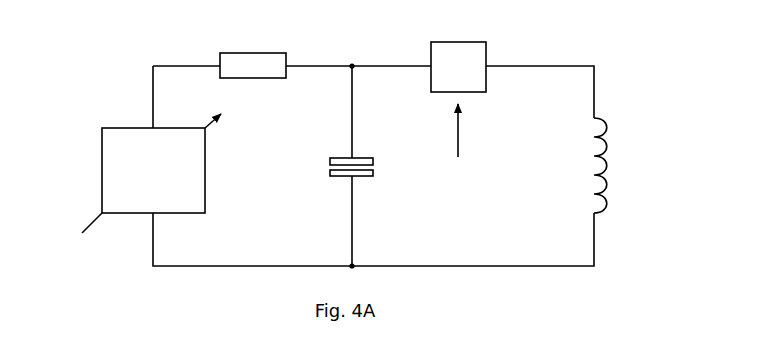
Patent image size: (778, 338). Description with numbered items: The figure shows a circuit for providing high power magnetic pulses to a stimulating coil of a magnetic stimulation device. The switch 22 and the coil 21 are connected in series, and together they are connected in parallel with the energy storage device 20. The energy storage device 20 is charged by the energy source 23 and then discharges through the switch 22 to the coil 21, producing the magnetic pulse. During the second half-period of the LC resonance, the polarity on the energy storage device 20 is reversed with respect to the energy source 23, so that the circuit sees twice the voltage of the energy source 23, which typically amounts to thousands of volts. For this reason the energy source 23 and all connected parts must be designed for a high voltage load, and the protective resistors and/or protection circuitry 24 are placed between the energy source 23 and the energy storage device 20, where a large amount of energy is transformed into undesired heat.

The energy storage device 20 is at (377, 159).
The coil 21 is at (607, 172).
The switch 22 is at (486, 48).
The energy source 23 is at (100, 160).
The protective resistors and/or protection circuitry 24 is at (285, 53).